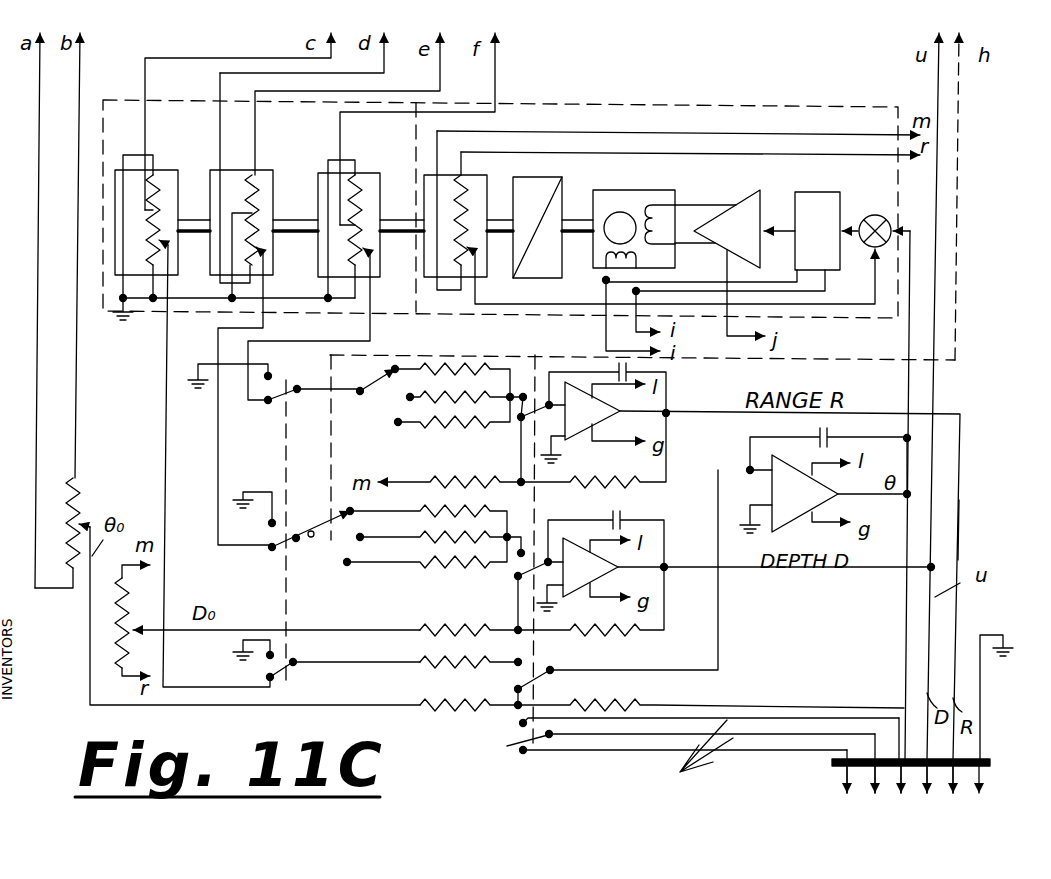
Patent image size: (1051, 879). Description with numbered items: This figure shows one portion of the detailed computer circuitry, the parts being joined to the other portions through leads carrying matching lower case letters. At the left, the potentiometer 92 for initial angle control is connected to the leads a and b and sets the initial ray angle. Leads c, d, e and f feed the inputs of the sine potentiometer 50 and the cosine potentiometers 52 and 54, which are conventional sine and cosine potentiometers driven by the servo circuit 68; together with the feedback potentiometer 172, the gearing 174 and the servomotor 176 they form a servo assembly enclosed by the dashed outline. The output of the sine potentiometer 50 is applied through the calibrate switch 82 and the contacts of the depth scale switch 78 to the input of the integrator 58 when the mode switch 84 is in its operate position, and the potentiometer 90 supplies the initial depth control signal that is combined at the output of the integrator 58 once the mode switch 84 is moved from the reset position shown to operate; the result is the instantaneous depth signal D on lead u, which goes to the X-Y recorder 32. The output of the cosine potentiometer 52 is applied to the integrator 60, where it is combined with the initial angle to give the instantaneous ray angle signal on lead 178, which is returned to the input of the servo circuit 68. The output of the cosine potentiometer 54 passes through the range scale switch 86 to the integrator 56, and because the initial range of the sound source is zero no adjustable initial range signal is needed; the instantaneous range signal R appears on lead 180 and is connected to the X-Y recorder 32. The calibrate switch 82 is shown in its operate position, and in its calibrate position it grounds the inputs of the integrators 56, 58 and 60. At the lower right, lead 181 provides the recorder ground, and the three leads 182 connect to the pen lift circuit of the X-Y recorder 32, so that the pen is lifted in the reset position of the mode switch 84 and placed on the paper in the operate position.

The X-Y recorder 32 is at (910, 776).
The sine potentiometer 50 is at (262, 172).
The cosine potentiometer 52 is at (163, 170).
The cosine potentiometer 54 is at (365, 172).
The integrator 56 is at (592, 421).
The integrator 58 is at (591, 561).
The integrator 60 is at (825, 480).
The servo circuit 68 is at (720, 107).
The depth scale switch 78 is at (330, 485).
The calibrate switch 82 is at (285, 580).
The mode switch 84 is at (534, 746).
The range scale switch 86 is at (332, 400).
The potentiometer 90 is at (137, 627).
The potentiometer 92 is at (82, 520).
The feedback potentiometer 172 is at (469, 173).
The gearing 174 is at (543, 173).
The servomotor 176 is at (648, 190).
The lead 178 is at (905, 473).
The lead 180 is at (959, 532).
The lead 181 is at (983, 707).
The leads 182 is at (664, 780).